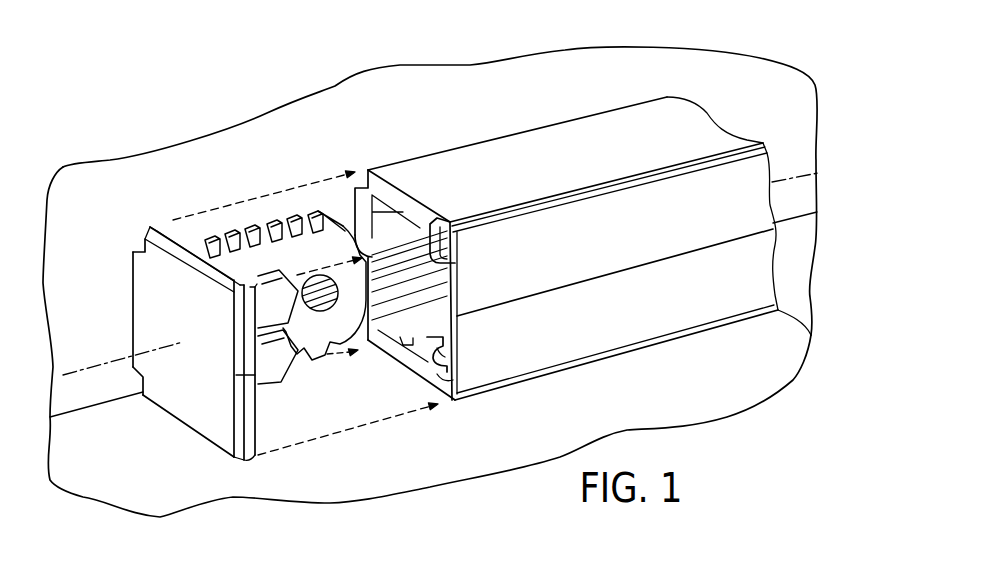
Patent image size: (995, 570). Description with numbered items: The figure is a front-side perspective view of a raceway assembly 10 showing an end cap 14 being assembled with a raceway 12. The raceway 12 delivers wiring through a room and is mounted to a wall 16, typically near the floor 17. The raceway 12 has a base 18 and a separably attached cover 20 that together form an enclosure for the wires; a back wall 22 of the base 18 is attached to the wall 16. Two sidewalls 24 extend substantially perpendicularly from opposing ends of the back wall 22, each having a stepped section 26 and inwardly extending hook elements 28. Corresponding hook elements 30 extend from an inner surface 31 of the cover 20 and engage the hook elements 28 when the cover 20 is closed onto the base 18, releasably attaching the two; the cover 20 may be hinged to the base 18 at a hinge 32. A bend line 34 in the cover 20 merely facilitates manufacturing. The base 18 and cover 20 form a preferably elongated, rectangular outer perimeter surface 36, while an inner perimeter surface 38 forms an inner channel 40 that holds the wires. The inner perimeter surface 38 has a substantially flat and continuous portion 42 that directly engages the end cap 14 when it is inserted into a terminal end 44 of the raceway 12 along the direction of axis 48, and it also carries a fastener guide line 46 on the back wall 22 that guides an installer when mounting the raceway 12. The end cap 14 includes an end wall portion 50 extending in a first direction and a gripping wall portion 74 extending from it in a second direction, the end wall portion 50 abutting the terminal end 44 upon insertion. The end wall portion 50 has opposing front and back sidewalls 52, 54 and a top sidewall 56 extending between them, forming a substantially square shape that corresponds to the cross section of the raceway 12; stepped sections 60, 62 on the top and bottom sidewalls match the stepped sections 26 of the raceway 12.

The raceway assembly 10 is at (672, 32).
The raceway 12 is at (542, 112).
The end cap 14 is at (140, 215).
The wall 16 is at (332, 90).
The floor 17 is at (128, 487).
The base 18 is at (392, 356).
The cover 20 is at (543, 378).
The back wall 22 is at (353, 200).
The sidewalls 24 is at (503, 157).
The stepped section 26 is at (364, 176).
The hook elements 28 is at (458, 255).
The hook elements 30 is at (438, 224).
The inner surface 31 is at (458, 303).
The hinge 32 is at (438, 408).
The bend line 34 is at (626, 270).
The outer perimeter surface 36 is at (673, 120).
The inner perimeter surface 38 is at (388, 228).
The inner channel 40 is at (416, 227).
The flat and continuous portion 42 is at (372, 355).
The terminal end 44 is at (448, 402).
The fastener guide line 46 is at (386, 253).
The axis 48 is at (88, 368).
The end wall portion 50 is at (180, 402).
The front sidewall 52 is at (248, 455).
The back sidewall 54 is at (130, 302).
The top sidewall 56 is at (168, 230).
The stepped section 60 is at (143, 247).
The stepped section 62 is at (140, 398).
The gripping wall portion 74 is at (306, 366).